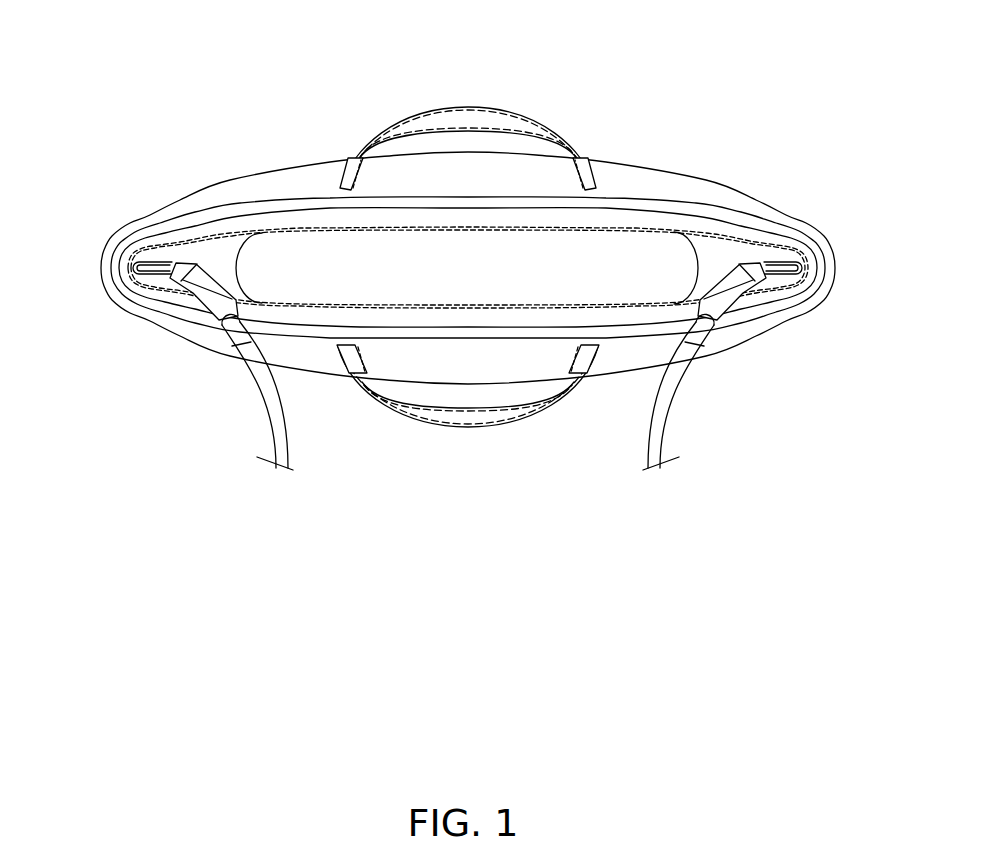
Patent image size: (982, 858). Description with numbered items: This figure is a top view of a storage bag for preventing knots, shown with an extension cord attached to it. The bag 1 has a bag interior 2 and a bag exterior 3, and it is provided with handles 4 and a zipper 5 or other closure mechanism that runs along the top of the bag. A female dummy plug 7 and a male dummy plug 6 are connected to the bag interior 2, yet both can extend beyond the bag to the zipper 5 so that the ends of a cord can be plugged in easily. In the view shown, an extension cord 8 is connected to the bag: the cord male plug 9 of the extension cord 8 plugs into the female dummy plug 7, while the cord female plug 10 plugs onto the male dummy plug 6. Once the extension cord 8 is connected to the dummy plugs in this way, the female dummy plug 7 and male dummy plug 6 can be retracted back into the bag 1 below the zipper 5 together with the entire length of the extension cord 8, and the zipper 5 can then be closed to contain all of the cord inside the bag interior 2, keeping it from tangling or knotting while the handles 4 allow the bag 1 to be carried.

The bag 1 is at (237, 192).
The bag interior 2 is at (283, 257).
The bag exterior 3 is at (672, 193).
The handles 4 is at (502, 122).
The zipper 5 is at (607, 227).
The male dummy plug 6 is at (196, 312).
The female dummy plug 7 is at (768, 292).
The extension cord 8 is at (275, 443).
The cord male plug 9 is at (738, 312).
The cord female plug 10 is at (208, 314).